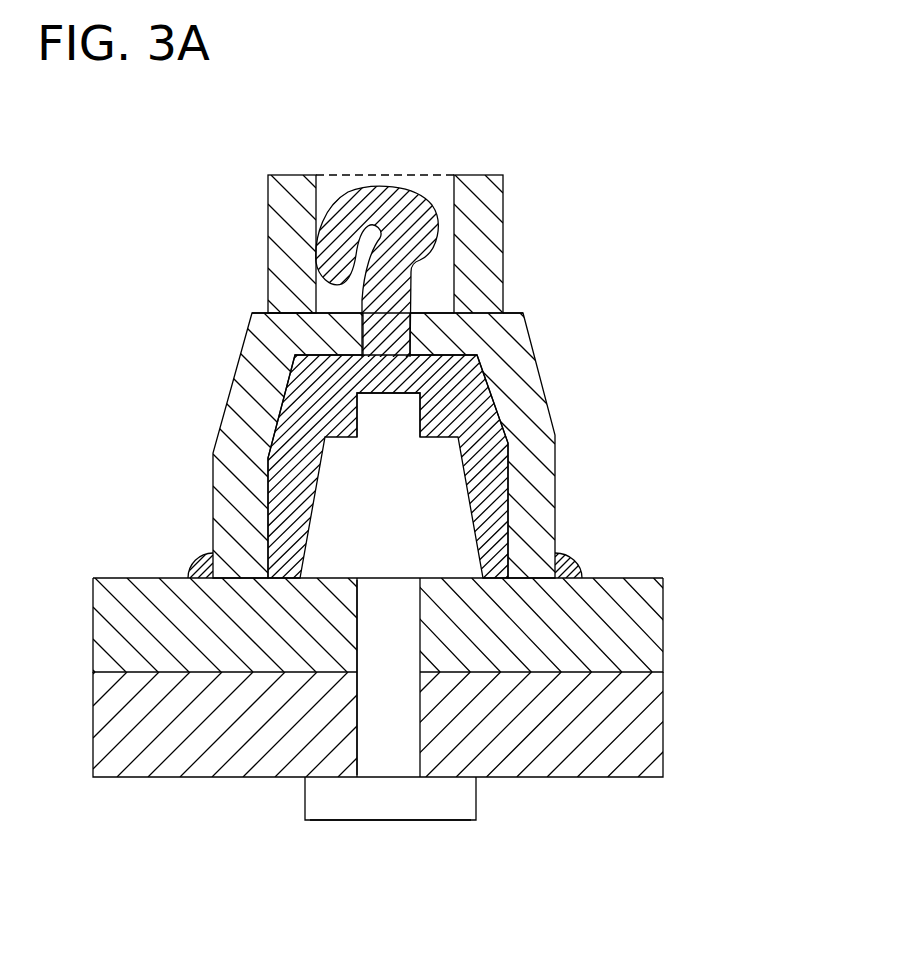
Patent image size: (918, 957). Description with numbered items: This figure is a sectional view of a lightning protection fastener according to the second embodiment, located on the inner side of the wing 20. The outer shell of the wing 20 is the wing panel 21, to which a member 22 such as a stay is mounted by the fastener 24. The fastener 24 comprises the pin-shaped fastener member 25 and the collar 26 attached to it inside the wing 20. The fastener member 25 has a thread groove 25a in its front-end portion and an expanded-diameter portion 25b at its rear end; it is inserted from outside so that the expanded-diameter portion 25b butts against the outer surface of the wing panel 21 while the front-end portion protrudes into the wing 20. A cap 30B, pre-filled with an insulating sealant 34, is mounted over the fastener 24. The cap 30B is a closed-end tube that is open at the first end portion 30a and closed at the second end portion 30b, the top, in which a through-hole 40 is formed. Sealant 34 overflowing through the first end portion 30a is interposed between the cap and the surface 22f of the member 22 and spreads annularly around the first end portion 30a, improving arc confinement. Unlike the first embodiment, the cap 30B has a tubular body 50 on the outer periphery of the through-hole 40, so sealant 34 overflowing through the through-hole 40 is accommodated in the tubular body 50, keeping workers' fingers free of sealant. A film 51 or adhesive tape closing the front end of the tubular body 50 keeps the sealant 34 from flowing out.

The wing 20 is at (603, 803).
The wing panel 21 is at (664, 725).
The member 22 is at (408, 566).
The surface of the member 22f is at (110, 578).
The fastener 24 is at (200, 810).
The fastener member 25 is at (303, 803).
The thread groove 25a is at (405, 405).
The expanded-diameter portion 25b is at (462, 812).
The collar 26 is at (337, 576).
The cap 30B is at (244, 353).
The first end portion 30a is at (532, 575).
The second end portion 30b is at (264, 312).
The sealant 34 is at (462, 372).
The through-hole 40 is at (411, 262).
The tubular body 50 is at (503, 203).
The film 51 is at (404, 157).